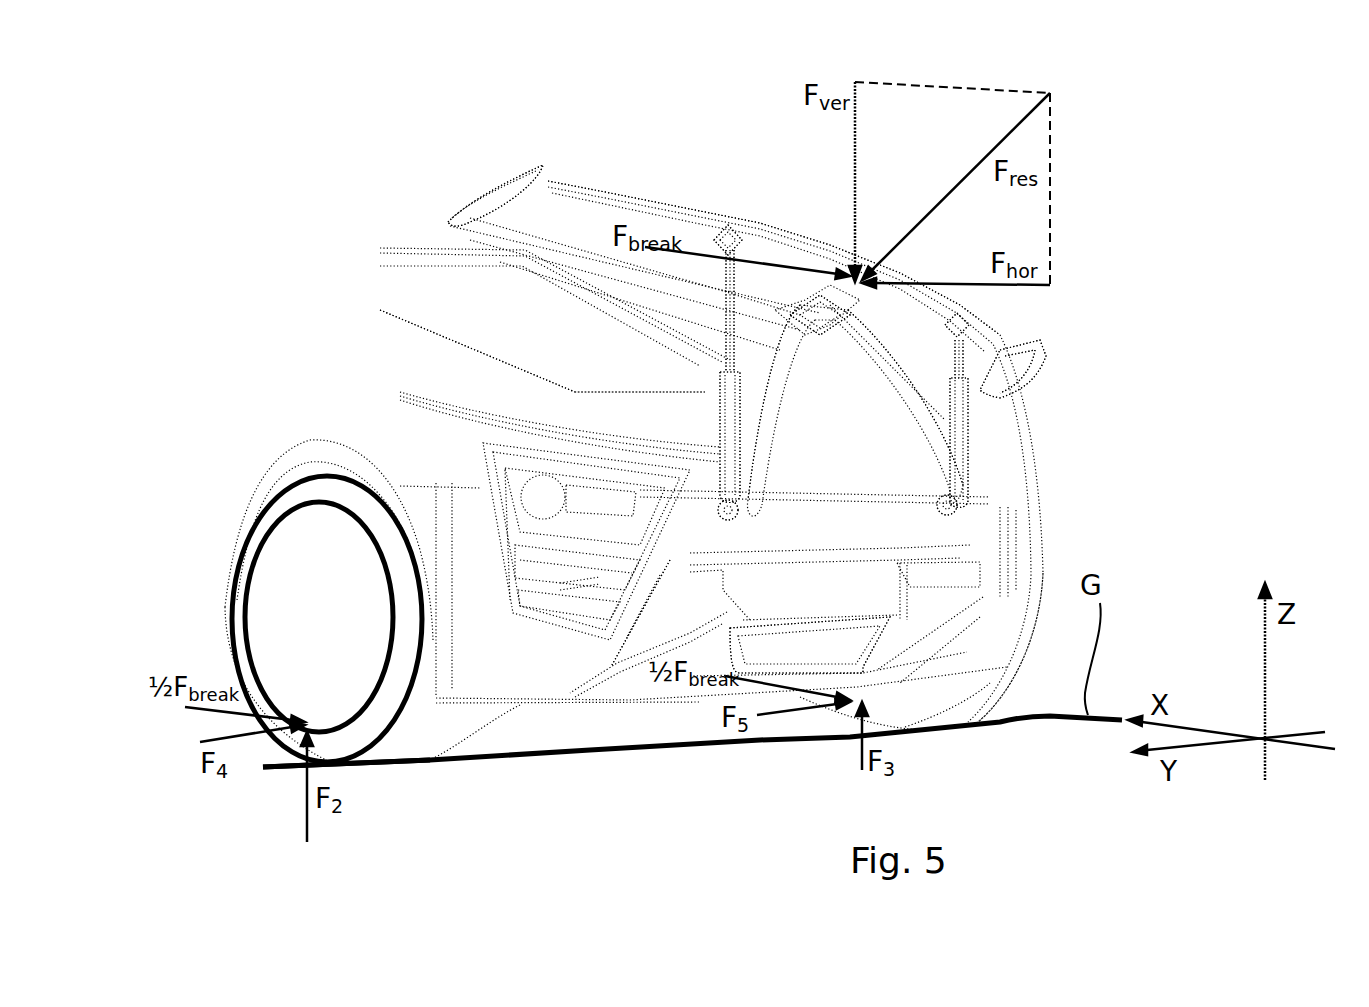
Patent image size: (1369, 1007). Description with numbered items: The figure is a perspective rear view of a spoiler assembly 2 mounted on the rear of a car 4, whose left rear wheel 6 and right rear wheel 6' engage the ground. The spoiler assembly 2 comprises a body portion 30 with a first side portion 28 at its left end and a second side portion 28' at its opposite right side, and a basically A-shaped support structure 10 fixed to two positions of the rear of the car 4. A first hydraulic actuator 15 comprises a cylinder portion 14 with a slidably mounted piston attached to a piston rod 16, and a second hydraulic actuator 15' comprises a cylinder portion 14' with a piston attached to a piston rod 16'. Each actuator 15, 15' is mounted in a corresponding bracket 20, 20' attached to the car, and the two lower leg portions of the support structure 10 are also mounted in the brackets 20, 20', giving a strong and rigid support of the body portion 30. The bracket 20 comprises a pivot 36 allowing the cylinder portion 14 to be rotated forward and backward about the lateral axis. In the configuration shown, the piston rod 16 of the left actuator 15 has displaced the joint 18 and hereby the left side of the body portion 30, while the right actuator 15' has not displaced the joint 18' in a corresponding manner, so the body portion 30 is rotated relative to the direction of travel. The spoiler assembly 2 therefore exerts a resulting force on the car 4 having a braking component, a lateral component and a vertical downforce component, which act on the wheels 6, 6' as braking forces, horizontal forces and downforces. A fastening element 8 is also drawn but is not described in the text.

The spoiler assembly 2 is at (759, 147).
The car 4 is at (350, 324).
The left rear wheel 6 is at (363, 794).
The right rear wheel 6' is at (1073, 617).
The fastening element 8 is at (866, 313).
The support structure 10 is at (965, 472).
The cylinder portion 14 is at (675, 437).
The cylinder portion 14' is at (1039, 443).
The first hydraulic actuator 15 is at (640, 378).
The second hydraulic actuator 15' is at (1056, 373).
The piston rod 16 is at (656, 311).
The piston rod 16' is at (1031, 354).
The joint 18 is at (722, 196).
The joint 18' is at (1010, 313).
The bracket 20 is at (787, 525).
The bracket 20' is at (901, 505).
The first side portion 28 is at (485, 156).
The second side portion 28' is at (1096, 376).
The body portion 30 is at (625, 202).
The pivot 36 is at (720, 505).